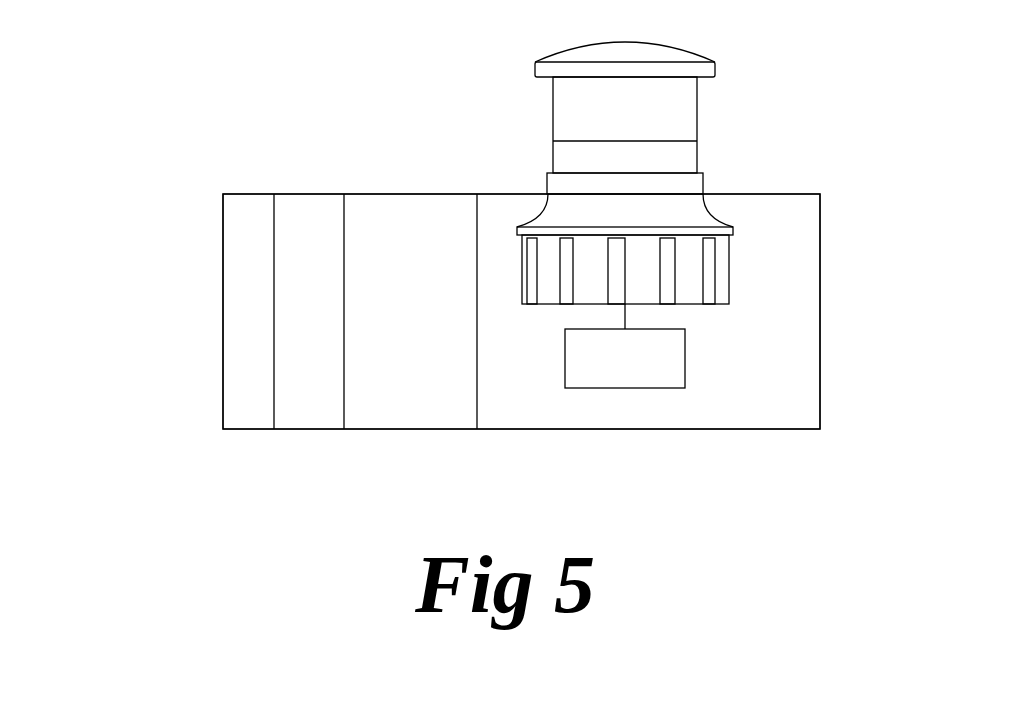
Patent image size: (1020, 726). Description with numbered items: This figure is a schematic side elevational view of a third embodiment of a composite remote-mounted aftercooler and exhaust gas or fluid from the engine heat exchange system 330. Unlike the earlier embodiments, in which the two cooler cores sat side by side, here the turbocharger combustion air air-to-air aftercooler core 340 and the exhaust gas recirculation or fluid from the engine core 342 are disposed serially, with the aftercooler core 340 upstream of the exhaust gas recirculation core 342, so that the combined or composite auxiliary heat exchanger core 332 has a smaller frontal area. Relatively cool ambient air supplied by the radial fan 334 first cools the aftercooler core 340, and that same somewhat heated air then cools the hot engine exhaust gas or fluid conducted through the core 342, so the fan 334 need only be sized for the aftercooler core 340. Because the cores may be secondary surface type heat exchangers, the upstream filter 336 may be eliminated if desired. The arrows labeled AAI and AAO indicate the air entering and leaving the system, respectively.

The composite remote-mounted aftercooler and fluid from the engine heat exchange sys 330 is at (386, 118).
The combined or composite auxiliary heat exchanger core 332 is at (223, 194).
The radial fan 334 is at (478, 408).
The upstream filter 336 is at (553, 110).
The turbocharger combustion air air-to-air aftercooler core 340 is at (344, 229).
The exhaust gas recirculation or fluid from the engine core 342 is at (275, 408).
The air out AAO is at (200, 330).
The air in AAI is at (725, 112).